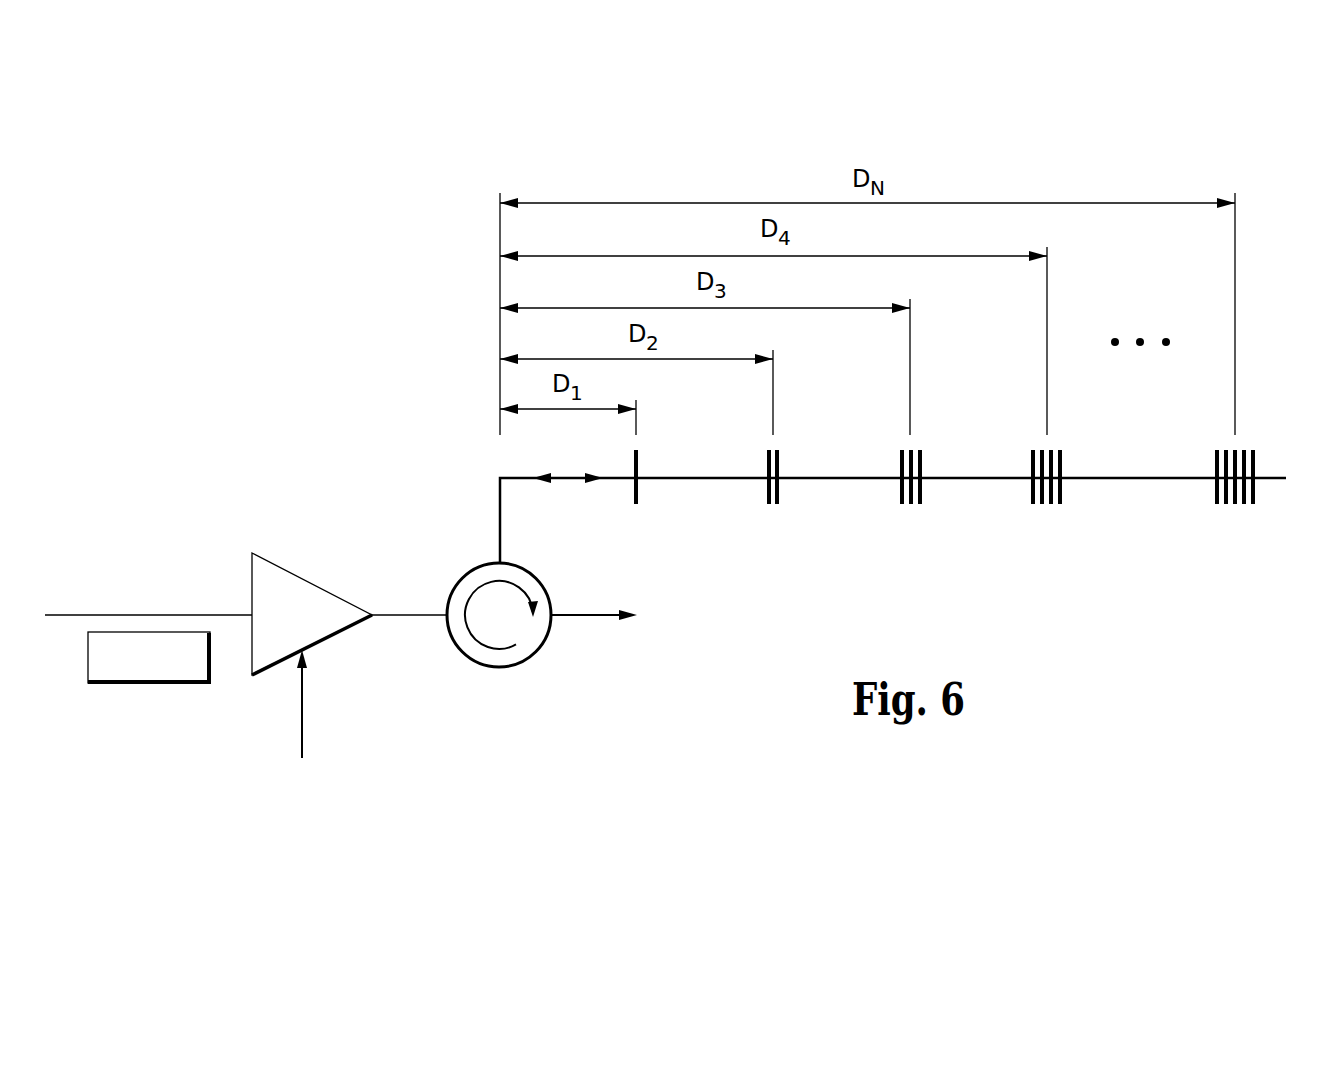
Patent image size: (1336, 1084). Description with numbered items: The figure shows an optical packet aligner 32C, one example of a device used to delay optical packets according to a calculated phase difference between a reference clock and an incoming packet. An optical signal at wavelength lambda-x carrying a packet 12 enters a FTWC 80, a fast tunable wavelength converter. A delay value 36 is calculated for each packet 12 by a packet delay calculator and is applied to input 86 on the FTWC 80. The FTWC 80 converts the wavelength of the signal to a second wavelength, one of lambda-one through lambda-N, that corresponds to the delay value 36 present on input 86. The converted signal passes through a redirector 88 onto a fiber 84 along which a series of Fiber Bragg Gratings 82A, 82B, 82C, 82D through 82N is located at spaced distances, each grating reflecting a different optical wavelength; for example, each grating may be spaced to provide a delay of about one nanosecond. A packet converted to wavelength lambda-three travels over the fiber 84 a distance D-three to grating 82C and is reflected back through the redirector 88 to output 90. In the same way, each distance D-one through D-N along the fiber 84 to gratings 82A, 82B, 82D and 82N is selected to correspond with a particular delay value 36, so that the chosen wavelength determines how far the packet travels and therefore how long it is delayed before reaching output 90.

The packet 12 is at (147, 684).
The FTWC 80 is at (317, 582).
The input 86 is at (300, 708).
The delay value 36 is at (302, 805).
The redirector 88 is at (497, 668).
The output 90 is at (586, 612).
The fiber 84 is at (1143, 476).
The Fiber Bragg Grating 82A is at (639, 500).
The Fiber Bragg Grating 82B is at (779, 500).
The Fiber Bragg Grating 82C is at (922, 500).
The Fiber Bragg Grating 82D is at (1062, 500).
The Fiber Bragg Grating 82N is at (1255, 500).
The optical packet aligner 32C is at (1222, 698).